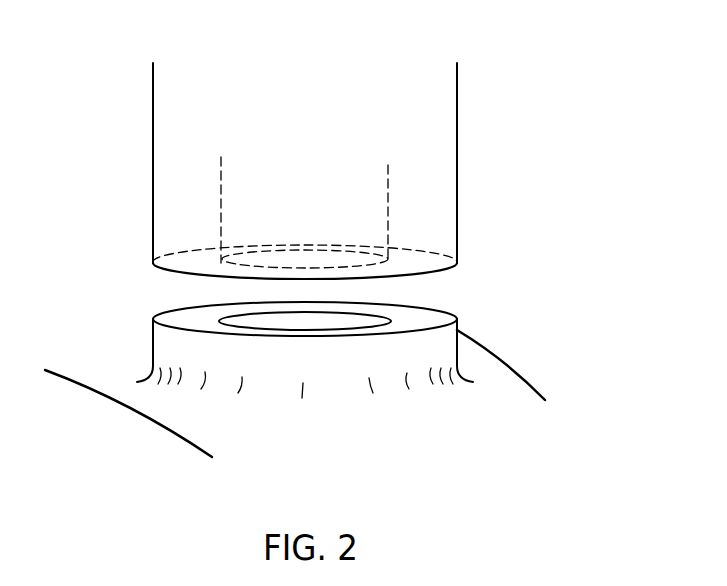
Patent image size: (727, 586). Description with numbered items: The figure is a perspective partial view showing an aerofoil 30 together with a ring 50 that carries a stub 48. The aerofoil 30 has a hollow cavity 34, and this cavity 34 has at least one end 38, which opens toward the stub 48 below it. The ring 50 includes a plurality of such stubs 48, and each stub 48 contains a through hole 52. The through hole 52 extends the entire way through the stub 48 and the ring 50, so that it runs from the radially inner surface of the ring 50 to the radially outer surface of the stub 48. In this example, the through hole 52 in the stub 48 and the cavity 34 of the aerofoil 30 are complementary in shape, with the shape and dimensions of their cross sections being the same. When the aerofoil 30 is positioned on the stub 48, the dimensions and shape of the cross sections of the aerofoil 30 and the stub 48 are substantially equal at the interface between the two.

The aerofoil 30 is at (457, 165).
The hollow cavity 34 is at (254, 213).
The end 38 is at (320, 272).
The stub 48 is at (457, 330).
The ring 50 is at (500, 390).
The through hole 52 is at (267, 320).